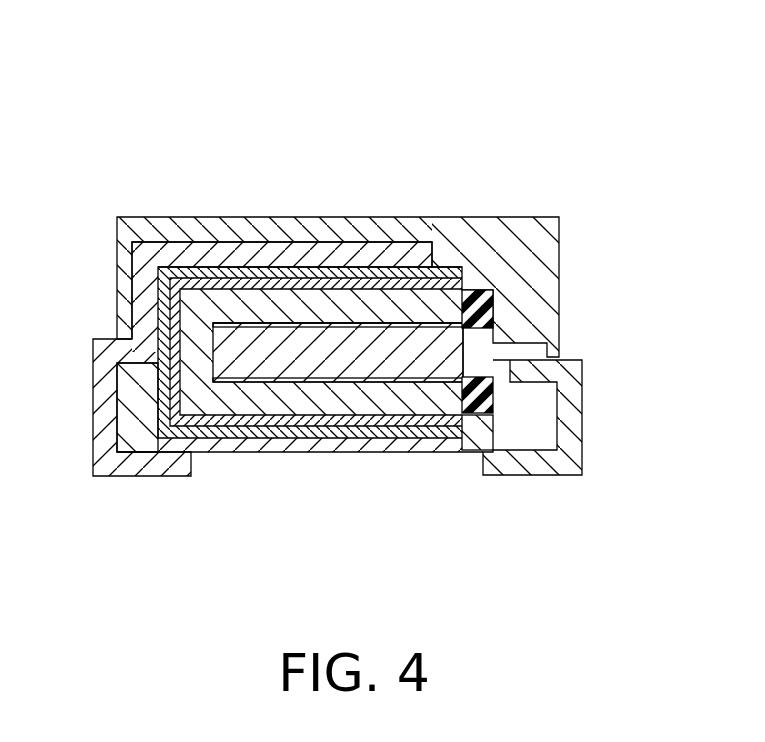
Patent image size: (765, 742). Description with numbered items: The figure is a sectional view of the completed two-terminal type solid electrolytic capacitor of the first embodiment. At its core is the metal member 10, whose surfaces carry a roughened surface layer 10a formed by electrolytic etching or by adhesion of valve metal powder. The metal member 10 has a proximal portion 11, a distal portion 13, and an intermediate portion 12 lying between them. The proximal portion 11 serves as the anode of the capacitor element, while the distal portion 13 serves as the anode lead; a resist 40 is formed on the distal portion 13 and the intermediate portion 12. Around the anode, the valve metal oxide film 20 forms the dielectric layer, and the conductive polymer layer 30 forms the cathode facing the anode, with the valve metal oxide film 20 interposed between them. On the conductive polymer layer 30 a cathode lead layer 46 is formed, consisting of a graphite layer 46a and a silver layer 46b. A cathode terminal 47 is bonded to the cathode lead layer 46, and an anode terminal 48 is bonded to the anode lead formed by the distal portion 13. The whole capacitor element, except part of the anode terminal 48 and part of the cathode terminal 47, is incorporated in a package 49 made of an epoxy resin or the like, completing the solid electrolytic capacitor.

The metal member 10 is at (339, 369).
The roughened surface layer 10a is at (230, 323).
The proximal portion 11 is at (323, 357).
The intermediate portion 12 is at (462, 357).
The distal portion 13 is at (485, 430).
The valve metal oxide film 20 is at (272, 325).
The conductive polymer layer 30 is at (322, 300).
The resist 40 is at (482, 297).
The cathode lead layer 46 is at (310, 230).
The graphite layer 46a is at (358, 285).
The silver layer 46b is at (450, 273).
The cathode terminal 47 is at (93, 339).
The anode terminal 48 is at (578, 413).
The package 49 is at (538, 238).